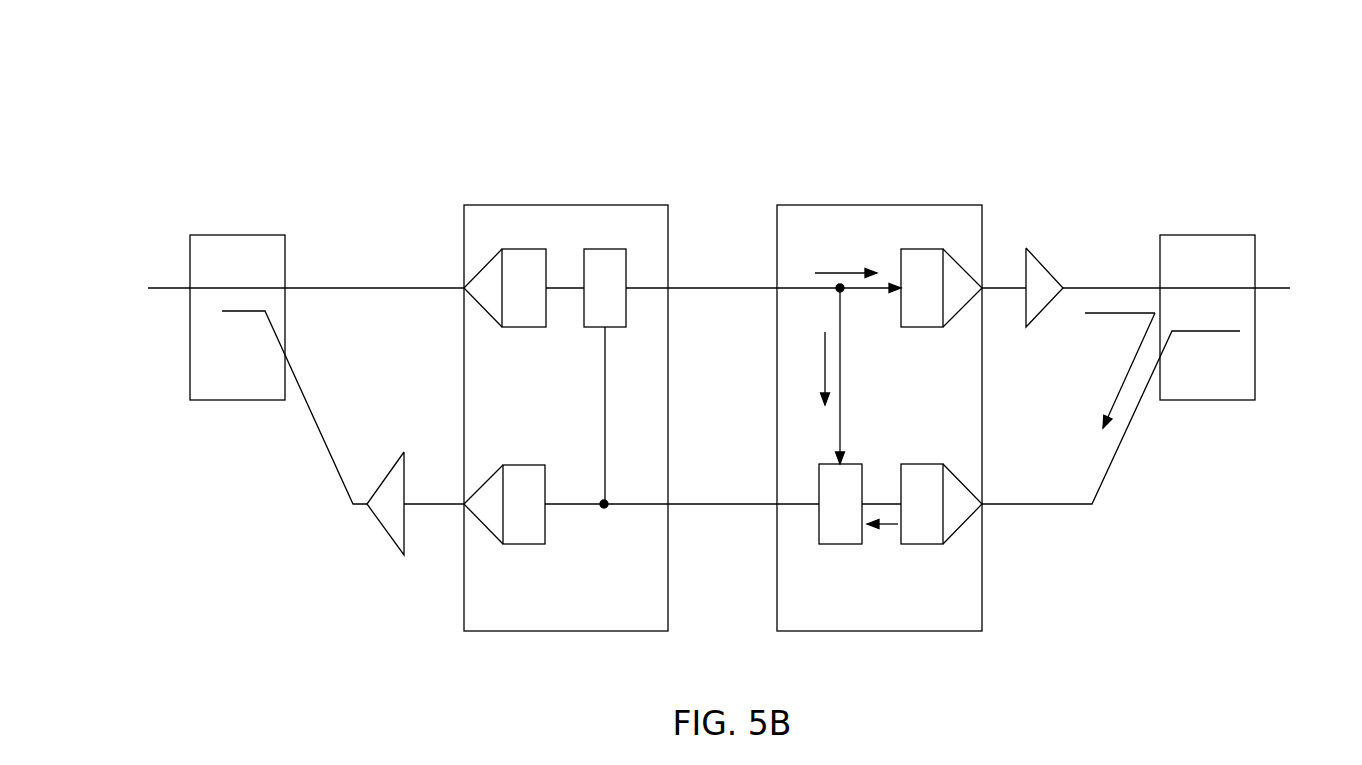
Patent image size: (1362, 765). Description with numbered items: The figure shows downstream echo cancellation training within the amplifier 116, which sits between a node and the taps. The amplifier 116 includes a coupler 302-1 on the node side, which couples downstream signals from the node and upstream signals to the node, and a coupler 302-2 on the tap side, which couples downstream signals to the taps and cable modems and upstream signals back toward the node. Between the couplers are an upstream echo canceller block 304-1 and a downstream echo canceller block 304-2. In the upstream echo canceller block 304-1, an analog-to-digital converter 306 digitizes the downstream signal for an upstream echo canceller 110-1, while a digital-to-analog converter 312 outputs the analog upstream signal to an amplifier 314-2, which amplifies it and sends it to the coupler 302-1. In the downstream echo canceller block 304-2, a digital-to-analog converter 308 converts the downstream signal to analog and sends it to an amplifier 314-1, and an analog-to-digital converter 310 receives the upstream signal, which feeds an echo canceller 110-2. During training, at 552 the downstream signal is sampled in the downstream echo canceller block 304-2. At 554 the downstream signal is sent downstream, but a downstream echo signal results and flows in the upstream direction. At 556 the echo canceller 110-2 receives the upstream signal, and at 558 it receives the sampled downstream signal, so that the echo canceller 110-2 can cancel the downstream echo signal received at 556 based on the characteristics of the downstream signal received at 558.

The amplifier 116 is at (714, 332).
The coupler 302-1 is at (237, 235).
The coupler 302-2 is at (1208, 235).
The upstream echo canceller block 304-1 is at (508, 205).
The downstream echo canceller block 304-2 is at (879, 205).
The upstream echo canceller 110-1 is at (605, 249).
The echo canceller 110-2 is at (819, 490).
The analog-to-digital converter 306 is at (522, 327).
The digital-to-analog converter 308 is at (935, 327).
The analog-to-digital converter 310 is at (943, 464).
The digital-to-analog converter 312 is at (522, 465).
The amplifier 314-1 is at (1034, 327).
The amplifier 314-2 is at (394, 549).
The sampling of the downstream signal 552 is at (838, 273).
The sending of the downstream signal 554 is at (1115, 400).
The receipt of the upstream signal 556 is at (900, 530).
The receipt of the downstream signal 558 is at (825, 367).